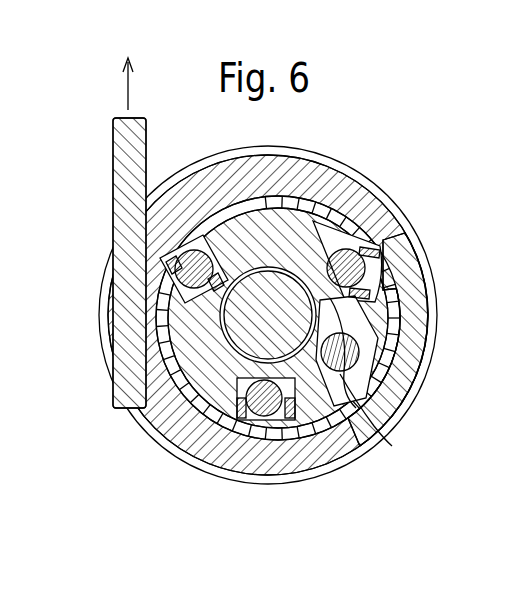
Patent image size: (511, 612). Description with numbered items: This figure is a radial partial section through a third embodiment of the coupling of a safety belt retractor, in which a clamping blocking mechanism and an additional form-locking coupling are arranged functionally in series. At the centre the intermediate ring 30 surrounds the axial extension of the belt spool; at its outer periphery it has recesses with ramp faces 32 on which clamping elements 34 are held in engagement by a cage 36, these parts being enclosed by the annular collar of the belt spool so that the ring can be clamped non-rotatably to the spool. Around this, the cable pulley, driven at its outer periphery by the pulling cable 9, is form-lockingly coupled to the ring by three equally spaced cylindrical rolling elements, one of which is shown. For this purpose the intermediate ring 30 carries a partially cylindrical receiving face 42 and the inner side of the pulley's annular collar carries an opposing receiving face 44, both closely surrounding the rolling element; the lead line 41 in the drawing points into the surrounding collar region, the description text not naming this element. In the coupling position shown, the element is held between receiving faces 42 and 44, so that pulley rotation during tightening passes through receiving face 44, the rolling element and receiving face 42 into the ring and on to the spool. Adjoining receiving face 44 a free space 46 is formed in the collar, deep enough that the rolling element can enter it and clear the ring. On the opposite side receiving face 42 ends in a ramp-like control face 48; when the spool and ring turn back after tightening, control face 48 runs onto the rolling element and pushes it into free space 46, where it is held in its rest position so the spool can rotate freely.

The pulling cable 9 is at (117, 188).
The intermediate ring 30 is at (192, 372).
The ramp faces 32 is at (180, 299).
The clamping elements 34 is at (263, 414).
The cage 36 is at (301, 432).
The housing ring 41 is at (393, 393).
The receiving face 42 is at (345, 470).
The receiving face 44 is at (355, 322).
The free space 46 is at (387, 434).
The ramp-like control face 48 is at (393, 311).